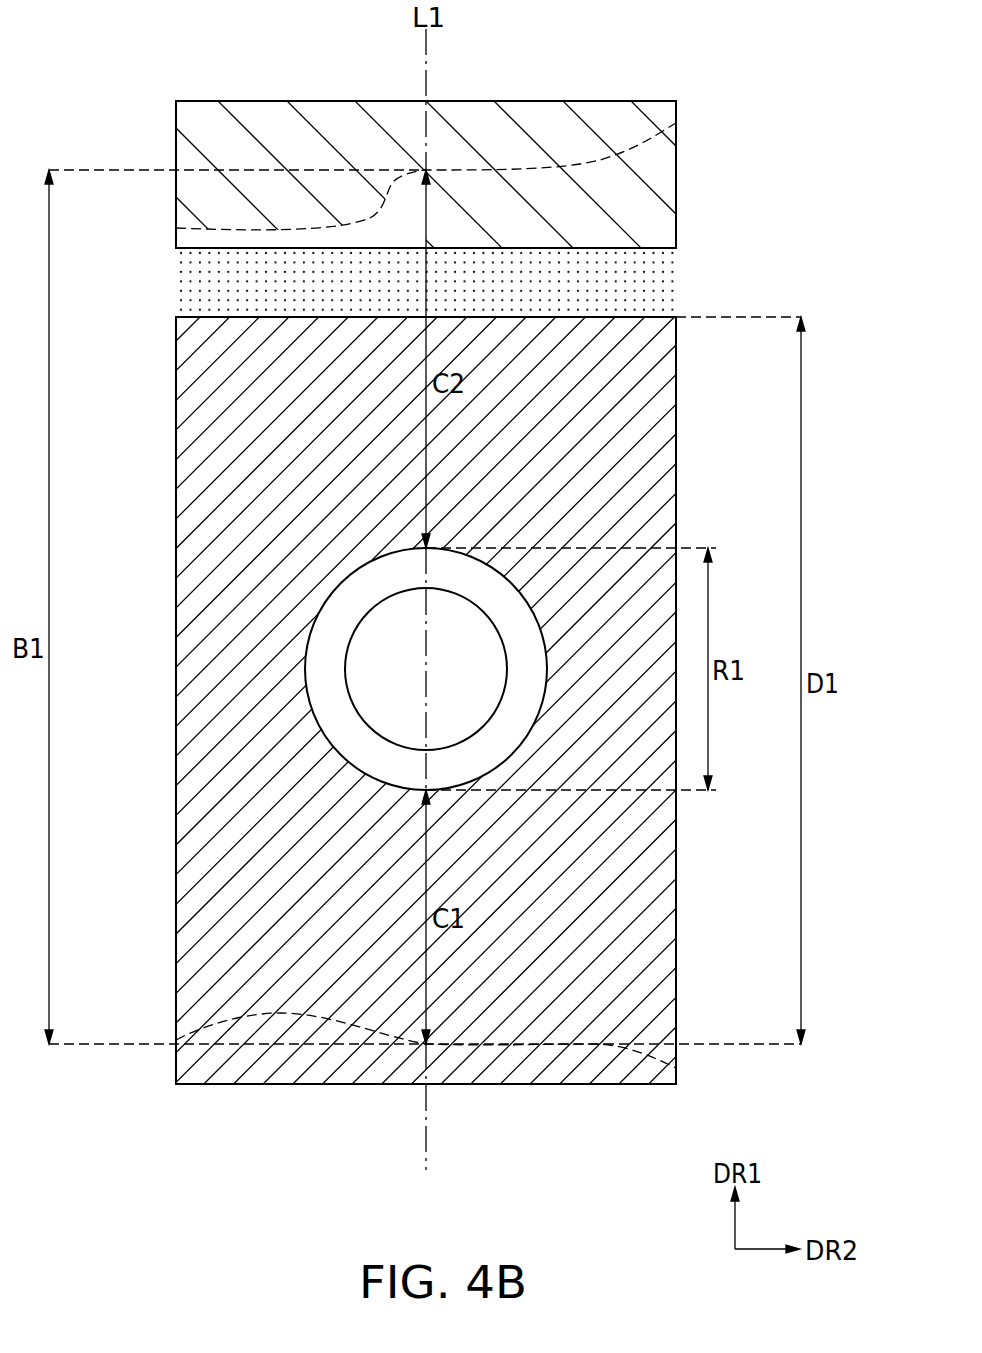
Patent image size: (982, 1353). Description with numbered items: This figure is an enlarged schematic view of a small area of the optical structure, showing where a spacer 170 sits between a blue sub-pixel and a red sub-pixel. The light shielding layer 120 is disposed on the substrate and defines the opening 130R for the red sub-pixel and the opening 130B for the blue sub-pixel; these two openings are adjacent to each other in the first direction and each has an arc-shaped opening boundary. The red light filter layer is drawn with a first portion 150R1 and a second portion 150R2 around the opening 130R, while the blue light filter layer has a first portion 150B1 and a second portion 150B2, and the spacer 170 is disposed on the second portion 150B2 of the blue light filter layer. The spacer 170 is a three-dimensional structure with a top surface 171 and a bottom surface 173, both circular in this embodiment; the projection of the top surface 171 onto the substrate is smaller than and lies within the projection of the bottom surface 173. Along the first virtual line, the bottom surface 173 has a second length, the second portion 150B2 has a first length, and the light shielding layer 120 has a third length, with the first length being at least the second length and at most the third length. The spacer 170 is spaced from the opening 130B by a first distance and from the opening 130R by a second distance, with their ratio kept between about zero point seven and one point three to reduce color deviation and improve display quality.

The opening 130R is at (395, 127).
The first portion of the red light filter layer 150R1 is at (507, 122).
The second portion of the red light filter layer 150R2 is at (200, 228).
The light shielding layer 120 is at (655, 278).
The second portion 150B2 is at (198, 468).
The first portion of the blue light filter layer 150B1 is at (193, 1060).
The spacer 170 is at (318, 669).
The bottom surface 173 is at (335, 620).
The top surface 171 is at (388, 690).
The opening 130B is at (491, 739).